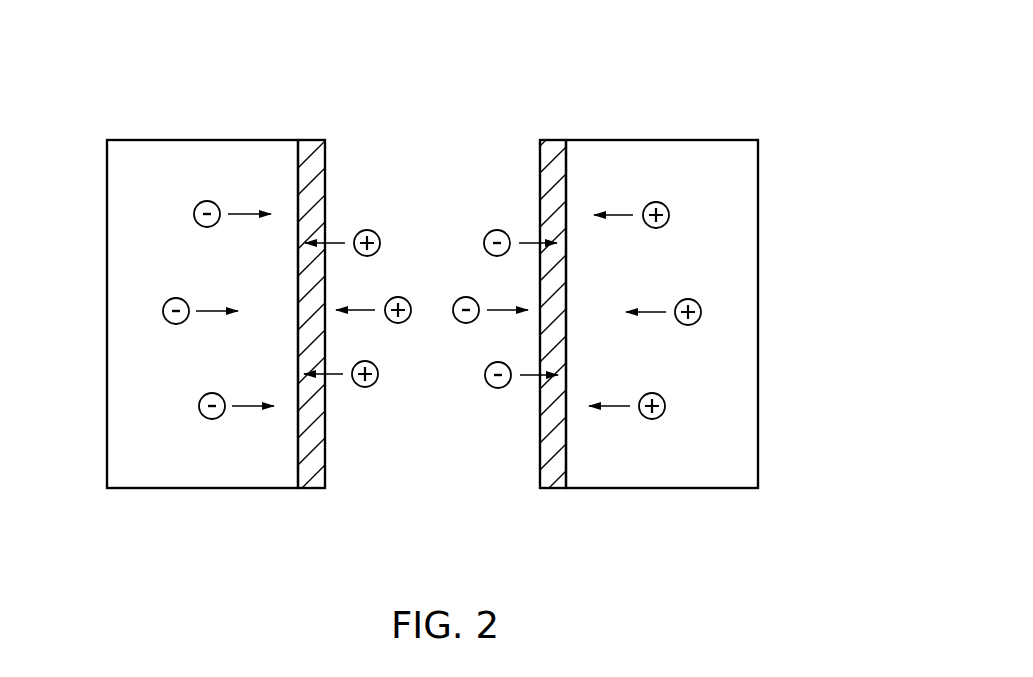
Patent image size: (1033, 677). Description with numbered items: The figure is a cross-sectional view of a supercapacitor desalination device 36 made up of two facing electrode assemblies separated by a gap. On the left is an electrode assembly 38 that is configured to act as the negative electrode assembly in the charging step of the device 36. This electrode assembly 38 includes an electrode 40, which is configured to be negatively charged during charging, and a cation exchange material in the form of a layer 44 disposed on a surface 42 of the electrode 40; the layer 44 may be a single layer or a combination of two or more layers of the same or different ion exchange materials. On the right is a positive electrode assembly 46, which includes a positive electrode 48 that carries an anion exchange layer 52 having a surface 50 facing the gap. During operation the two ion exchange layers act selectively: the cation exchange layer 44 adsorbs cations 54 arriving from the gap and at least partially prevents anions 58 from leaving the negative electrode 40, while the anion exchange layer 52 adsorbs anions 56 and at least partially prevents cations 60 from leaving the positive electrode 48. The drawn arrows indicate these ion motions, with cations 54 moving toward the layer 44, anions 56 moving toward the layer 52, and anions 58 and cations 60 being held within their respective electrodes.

The supercapacitor desalination device 36 is at (709, 62).
The electrode assembly 38 is at (106, 167).
The electrode 40 is at (123, 337).
The surface 42 is at (297, 462).
The cation exchange layer 44 is at (308, 483).
The positive electrode assembly 46 is at (760, 169).
The positive electrode 48 is at (730, 338).
The surface 50 is at (567, 464).
The anion exchange layer 52 is at (557, 483).
The cations 54 is at (369, 255).
The anions 56 is at (490, 365).
The anions 58 is at (164, 302).
The cations 60 is at (665, 412).